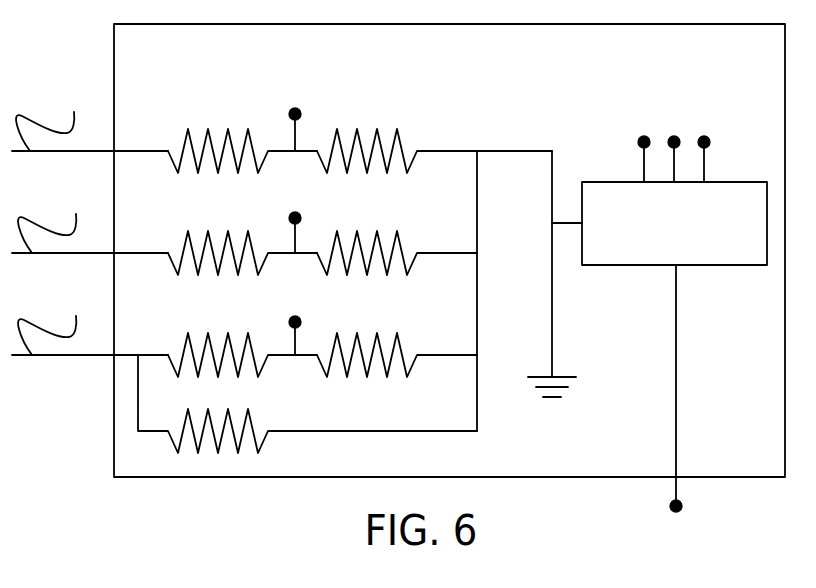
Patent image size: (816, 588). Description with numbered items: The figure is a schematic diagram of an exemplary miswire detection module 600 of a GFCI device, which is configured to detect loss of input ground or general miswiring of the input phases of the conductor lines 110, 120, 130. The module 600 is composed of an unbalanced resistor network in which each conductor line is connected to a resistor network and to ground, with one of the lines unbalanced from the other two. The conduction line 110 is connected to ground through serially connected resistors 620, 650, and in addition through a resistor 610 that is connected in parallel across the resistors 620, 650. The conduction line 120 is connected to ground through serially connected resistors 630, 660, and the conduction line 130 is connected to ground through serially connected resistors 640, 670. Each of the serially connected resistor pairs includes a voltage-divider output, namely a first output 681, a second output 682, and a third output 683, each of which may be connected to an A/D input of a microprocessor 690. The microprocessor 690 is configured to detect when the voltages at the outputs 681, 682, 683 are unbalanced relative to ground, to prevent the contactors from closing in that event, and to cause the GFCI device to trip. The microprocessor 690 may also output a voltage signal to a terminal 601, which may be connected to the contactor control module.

The miswire detection module 600 is at (434, 57).
The terminal 601 is at (676, 512).
The resistor 610 is at (150, 413).
The resistor 620 is at (150, 337).
The resistor 630 is at (150, 237).
The resistor 640 is at (150, 135).
The resistor 650 is at (409, 333).
The resistor 660 is at (409, 233).
The resistor 670 is at (409, 130).
The first output 681 is at (295, 316).
The second output 682 is at (295, 212).
The third output 683 is at (295, 108).
The microprocessor 690 is at (658, 223).
The conduction line 110 is at (90, 323).
The conduction line 120 is at (90, 222).
The conduction line 130 is at (90, 118).